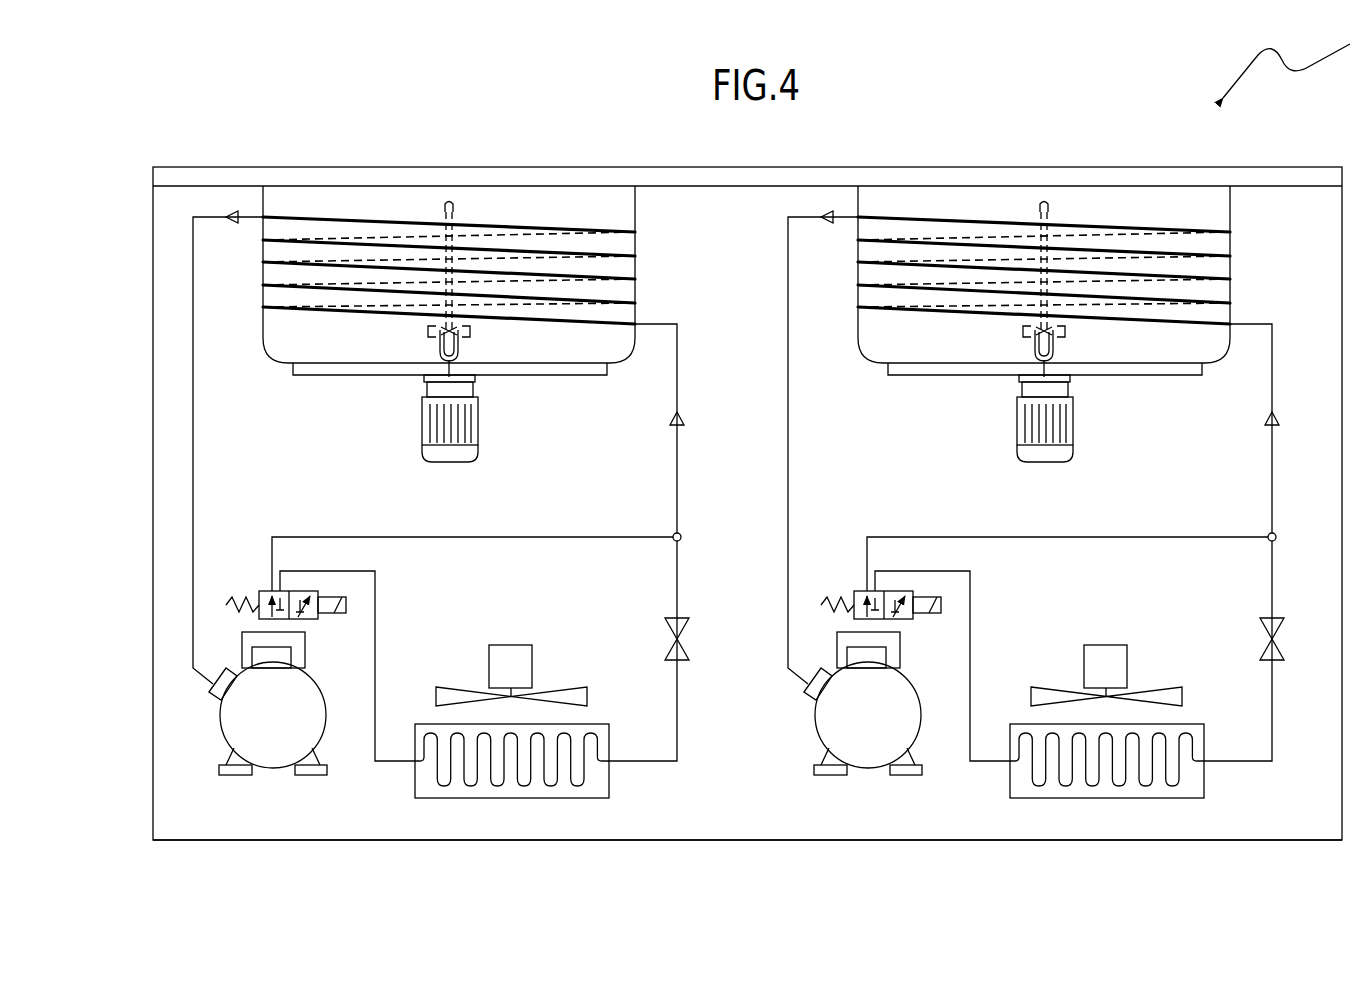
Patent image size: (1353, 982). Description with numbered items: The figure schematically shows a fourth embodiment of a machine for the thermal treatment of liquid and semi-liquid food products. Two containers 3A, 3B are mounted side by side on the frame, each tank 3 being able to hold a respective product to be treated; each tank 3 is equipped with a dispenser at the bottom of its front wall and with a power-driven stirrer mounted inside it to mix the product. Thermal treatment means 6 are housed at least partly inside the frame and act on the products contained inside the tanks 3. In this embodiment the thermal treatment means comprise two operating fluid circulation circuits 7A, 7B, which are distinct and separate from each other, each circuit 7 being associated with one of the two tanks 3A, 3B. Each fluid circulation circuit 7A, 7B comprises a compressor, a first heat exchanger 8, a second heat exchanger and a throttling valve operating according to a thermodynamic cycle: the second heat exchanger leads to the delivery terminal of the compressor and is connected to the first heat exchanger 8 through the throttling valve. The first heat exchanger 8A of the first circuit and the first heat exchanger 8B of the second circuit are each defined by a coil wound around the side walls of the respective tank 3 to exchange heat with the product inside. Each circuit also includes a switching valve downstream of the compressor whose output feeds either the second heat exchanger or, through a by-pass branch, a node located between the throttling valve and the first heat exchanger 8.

The tank 3 is at (449, 240).
The first container 3A is at (370, 200).
The second container 3B is at (965, 200).
The thermal treatment means 6 is at (653, 795).
The fluid circulation circuit 7 is at (347, 733).
The first operating fluid circulation circuit 7A is at (372, 775).
The second operating fluid circulation circuit 7B is at (982, 775).
The first heat exchanger 8 is at (442, 199).
The first heat exchanger of the first circuit 8A is at (282, 215).
The first heat exchanger of the second circuit 8B is at (877, 215).